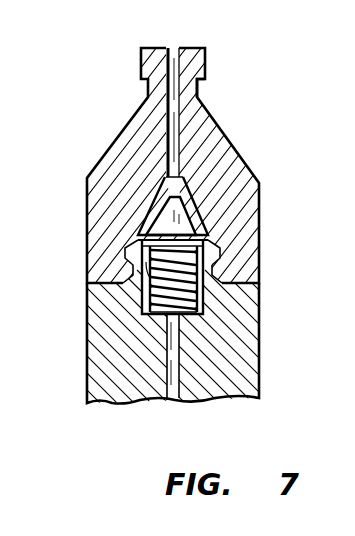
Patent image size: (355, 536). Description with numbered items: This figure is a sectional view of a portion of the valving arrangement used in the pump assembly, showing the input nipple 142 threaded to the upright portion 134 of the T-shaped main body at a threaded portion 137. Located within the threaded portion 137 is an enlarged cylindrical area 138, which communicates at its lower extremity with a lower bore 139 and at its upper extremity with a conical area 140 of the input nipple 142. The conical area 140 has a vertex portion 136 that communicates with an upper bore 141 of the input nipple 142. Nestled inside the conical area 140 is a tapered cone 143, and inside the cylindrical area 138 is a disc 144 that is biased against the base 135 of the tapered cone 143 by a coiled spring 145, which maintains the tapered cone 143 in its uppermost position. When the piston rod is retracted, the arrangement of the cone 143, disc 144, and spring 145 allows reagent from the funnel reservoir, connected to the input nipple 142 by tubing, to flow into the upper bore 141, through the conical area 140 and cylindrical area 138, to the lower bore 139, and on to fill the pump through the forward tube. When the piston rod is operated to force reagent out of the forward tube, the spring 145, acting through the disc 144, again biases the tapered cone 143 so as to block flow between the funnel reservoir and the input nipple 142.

The upright portion 134 is at (259, 343).
The base 135 is at (218, 240).
The vertex portion 136 is at (188, 183).
The threaded portion 137 is at (140, 287).
The enlarged cylindrical area 138 is at (215, 252).
The lower bore 139 is at (180, 365).
The conical area 140 is at (259, 183).
The upper bore 141 is at (181, 130).
The input nipple 142 is at (199, 86).
The tapered cone 143 is at (148, 214).
The disc 144 is at (148, 250).
The coiled spring 145 is at (148, 266).